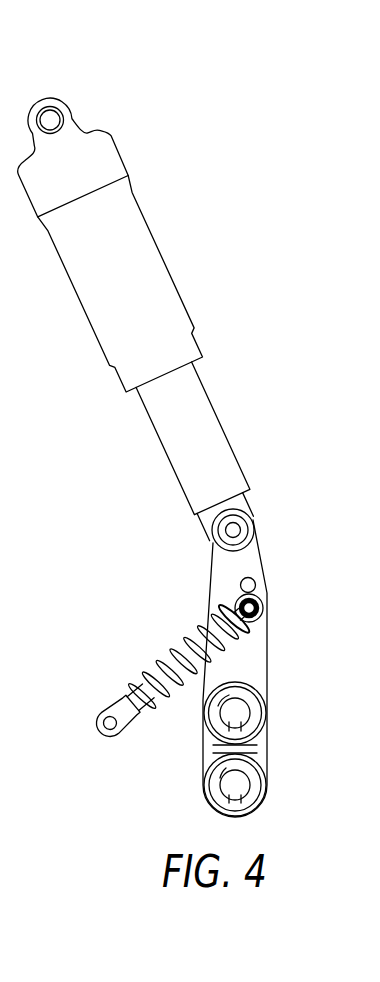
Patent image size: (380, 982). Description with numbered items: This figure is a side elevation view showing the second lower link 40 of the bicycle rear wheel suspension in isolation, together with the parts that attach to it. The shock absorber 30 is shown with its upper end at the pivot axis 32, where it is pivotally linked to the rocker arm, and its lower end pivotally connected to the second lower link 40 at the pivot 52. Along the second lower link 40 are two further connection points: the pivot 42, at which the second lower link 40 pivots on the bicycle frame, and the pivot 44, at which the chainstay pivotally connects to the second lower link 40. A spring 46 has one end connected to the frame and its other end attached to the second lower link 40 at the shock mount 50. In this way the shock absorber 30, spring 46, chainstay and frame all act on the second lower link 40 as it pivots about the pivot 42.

The shock absorber 30 is at (182, 302).
The pivot axis 32 is at (47, 99).
The second lower link 40 is at (268, 670).
The pivot 42 is at (250, 793).
The pivot 44 is at (250, 720).
The spring 46 is at (198, 625).
The shock mount 50 is at (260, 608).
The pivot 52 is at (240, 524).